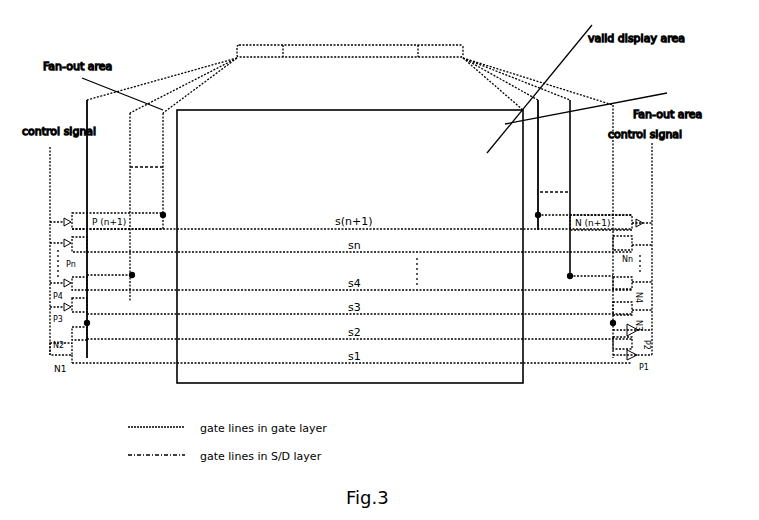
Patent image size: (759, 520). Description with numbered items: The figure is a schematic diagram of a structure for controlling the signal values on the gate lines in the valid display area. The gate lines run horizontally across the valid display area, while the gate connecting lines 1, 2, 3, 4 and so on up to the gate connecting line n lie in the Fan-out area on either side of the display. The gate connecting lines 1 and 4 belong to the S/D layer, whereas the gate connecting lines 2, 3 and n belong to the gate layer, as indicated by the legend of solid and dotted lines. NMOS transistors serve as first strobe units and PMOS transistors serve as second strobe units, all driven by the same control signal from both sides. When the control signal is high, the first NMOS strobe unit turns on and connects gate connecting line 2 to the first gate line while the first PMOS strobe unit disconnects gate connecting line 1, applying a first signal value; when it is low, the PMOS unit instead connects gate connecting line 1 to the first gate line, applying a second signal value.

The gate connecting line 1 is at (607, 231).
The gate connecting line 2 is at (93, 229).
The gate connecting line 3 is at (576, 188).
The gate connecting line 4 is at (124, 207).
The gate connecting line n is at (548, 165).